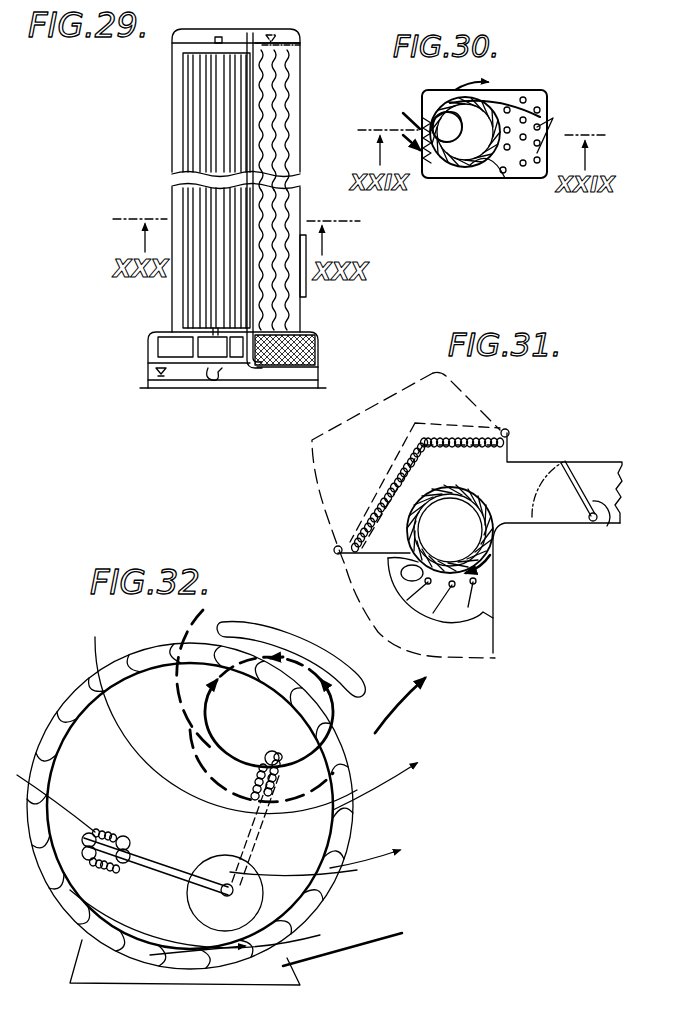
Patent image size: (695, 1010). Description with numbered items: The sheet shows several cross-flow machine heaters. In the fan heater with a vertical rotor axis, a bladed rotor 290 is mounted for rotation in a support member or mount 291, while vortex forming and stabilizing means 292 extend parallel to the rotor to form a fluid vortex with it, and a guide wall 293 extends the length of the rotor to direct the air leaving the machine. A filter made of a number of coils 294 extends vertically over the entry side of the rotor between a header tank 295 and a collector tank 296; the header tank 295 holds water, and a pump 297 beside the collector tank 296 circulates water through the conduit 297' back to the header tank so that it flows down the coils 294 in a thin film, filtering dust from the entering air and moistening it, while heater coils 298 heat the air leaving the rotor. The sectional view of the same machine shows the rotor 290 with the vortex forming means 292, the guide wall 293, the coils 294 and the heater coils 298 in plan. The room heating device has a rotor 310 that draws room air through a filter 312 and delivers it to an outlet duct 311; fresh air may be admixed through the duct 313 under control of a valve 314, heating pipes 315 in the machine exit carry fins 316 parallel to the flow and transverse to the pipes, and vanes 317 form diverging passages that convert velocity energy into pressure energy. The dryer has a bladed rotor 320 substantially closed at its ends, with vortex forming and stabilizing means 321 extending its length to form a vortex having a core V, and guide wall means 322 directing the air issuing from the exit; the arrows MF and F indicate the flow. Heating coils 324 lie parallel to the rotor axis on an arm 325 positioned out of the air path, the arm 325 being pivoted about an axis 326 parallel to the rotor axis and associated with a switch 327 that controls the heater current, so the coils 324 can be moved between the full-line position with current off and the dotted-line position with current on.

In FIG. 29, the bladed rotor 290 is at (200, 302).
In FIG. 30, the bladed rotor 290 is at (466, 165).
In FIG. 29, the support member or mount 291 is at (144, 388).
In FIG. 30, the vortex forming and stabilizing means 292 is at (423, 97).
In FIG. 30, the guide wall 293 is at (490, 178).
In FIG. 29, the coils 294 is at (285, 95).
In FIG. 30, the coils 294 is at (572, 126).
In FIG. 29, the header tank 295 is at (296, 38).
In FIG. 29, the collector tank 296 is at (310, 375).
In FIG. 29, the pump 297 is at (225, 402).
In FIG. 29, the conduit 297' is at (287, 234).
In FIG. 30, the heater coils 298 is at (433, 177).
In FIG. 31, the rotor 310 is at (487, 542).
In FIG. 31, the outlet duct 311 is at (476, 647).
In FIG. 31, the filter 312 is at (473, 437).
In FIG. 31, the duct 313 is at (528, 468).
In FIG. 31, the valve 314 is at (572, 509).
In FIG. 31, the heating pipes 315 is at (487, 578).
In FIG. 31, the fins 316 is at (482, 597).
In FIG. 31, the vanes 317 is at (480, 617).
In FIG. 32, the bladed rotor 320 is at (60, 684).
In FIG. 32, the vortex forming and stabilizing means 321 is at (278, 630).
In FIG. 32, the guide wall means 322 is at (380, 933).
In FIG. 32, the heating coils 324 is at (130, 812).
In FIG. 32, the arm 325 is at (165, 860).
In FIG. 32, the axis 326 is at (220, 892).
In FIG. 32, the switch 327 is at (212, 918).
In FIG. 32, the core V is at (212, 713).
In FIG. 32, the main flow MF is at (400, 735).
In FIG. 32, the flow F is at (402, 872).